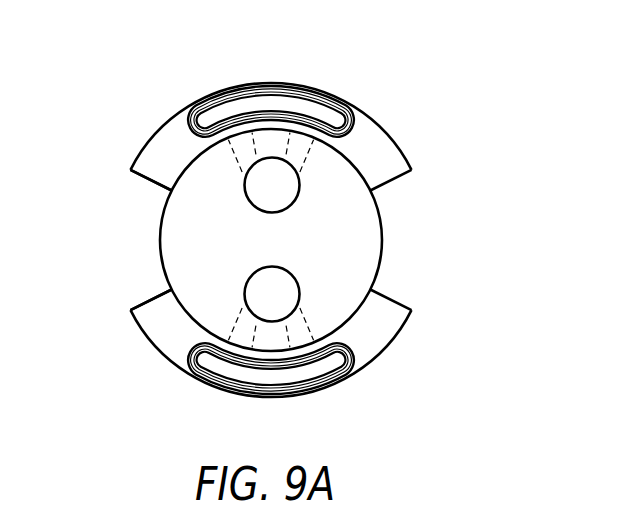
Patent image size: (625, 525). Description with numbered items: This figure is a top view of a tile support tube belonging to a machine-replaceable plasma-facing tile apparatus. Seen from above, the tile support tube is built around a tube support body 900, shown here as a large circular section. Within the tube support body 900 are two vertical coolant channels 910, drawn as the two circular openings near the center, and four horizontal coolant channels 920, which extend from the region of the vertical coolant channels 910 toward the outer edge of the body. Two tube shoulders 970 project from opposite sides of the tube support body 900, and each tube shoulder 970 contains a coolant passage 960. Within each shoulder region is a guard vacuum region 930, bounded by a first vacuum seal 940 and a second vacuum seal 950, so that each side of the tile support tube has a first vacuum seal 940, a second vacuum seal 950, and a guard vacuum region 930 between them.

The tube support body 900 is at (198, 246).
The vertical coolant channel 910 is at (281, 197).
The horizontal coolant channel 920 is at (242, 148).
The guard vacuum region 930 is at (310, 101).
The first vacuum seal 940 is at (344, 117).
The second vacuum seal 950 is at (206, 104).
The coolant passage 960 is at (273, 106).
The tube shoulder 970 is at (156, 150).